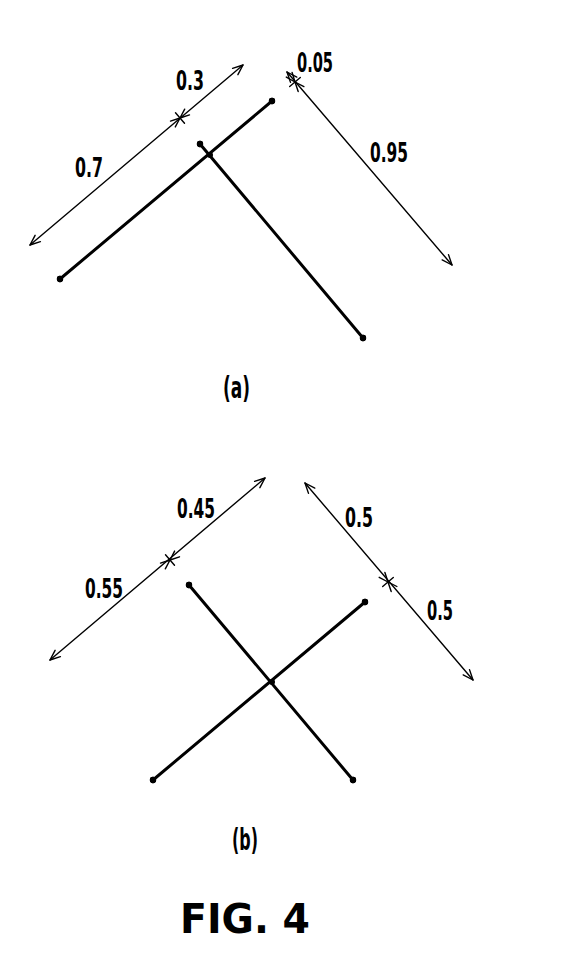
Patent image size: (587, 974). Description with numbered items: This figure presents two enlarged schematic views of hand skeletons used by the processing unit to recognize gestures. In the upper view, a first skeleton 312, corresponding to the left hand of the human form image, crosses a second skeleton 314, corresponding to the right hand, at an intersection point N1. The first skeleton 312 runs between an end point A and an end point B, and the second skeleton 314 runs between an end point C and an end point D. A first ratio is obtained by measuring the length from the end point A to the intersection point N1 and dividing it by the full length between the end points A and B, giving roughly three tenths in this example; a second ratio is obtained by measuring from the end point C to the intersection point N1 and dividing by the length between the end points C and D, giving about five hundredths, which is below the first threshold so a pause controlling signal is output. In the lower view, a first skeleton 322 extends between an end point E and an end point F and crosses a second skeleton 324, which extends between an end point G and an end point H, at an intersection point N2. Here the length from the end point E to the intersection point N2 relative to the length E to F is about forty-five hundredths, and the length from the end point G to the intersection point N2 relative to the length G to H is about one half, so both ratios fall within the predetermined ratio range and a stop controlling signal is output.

The first skeleton 312 is at (138, 213).
The second skeleton 314 is at (280, 239).
The intersection point N1 is at (214, 157).
The first skeleton 322 is at (336, 626).
The second skeleton 324 is at (345, 770).
The intersection point N2 is at (277, 684).
The end point A is at (281, 103).
The end point B is at (56, 297).
The end point C is at (193, 134).
The end point D is at (366, 355).
The end point E is at (373, 604).
The end point F is at (150, 798).
The end point G is at (199, 578).
The end point H is at (357, 797).